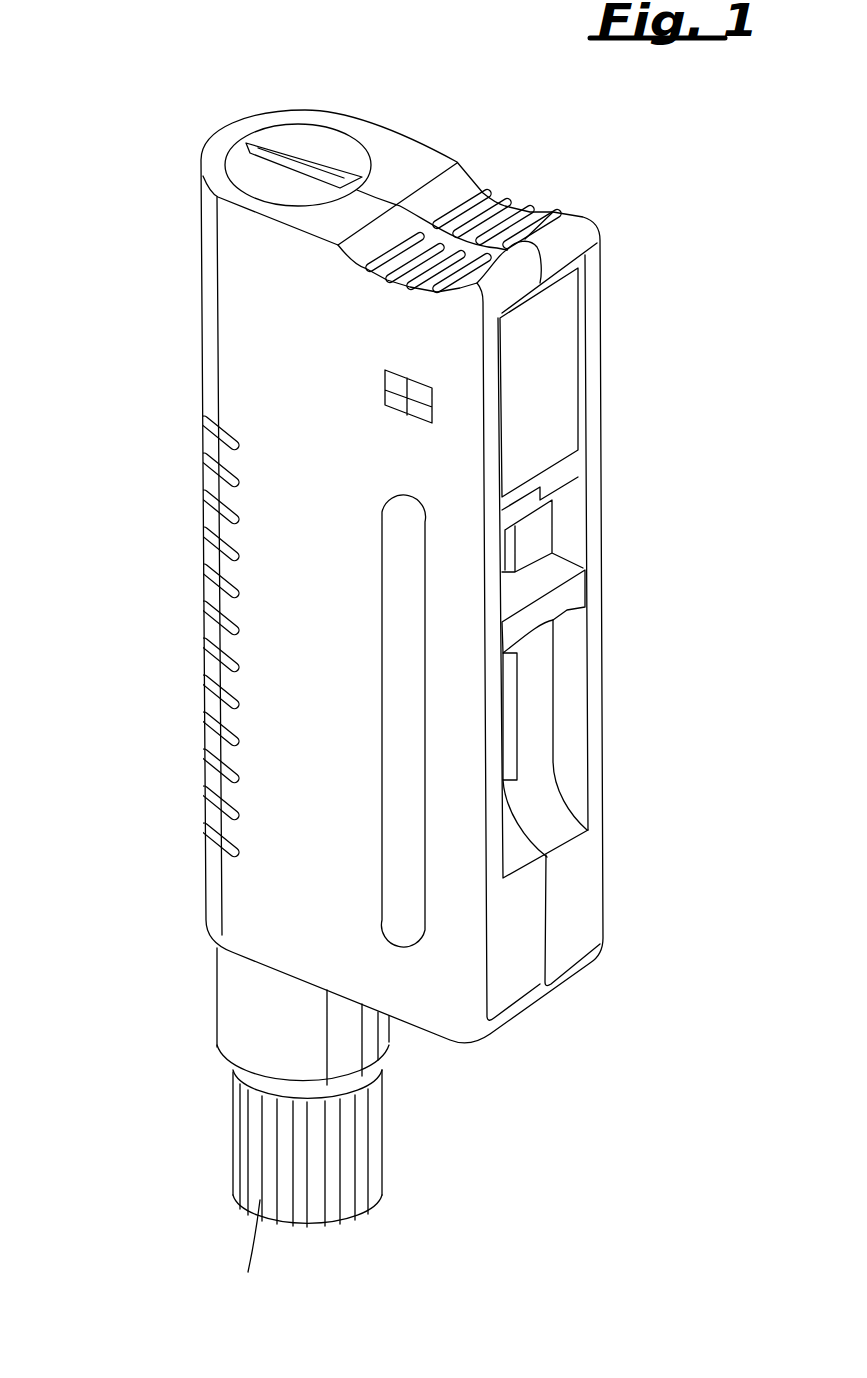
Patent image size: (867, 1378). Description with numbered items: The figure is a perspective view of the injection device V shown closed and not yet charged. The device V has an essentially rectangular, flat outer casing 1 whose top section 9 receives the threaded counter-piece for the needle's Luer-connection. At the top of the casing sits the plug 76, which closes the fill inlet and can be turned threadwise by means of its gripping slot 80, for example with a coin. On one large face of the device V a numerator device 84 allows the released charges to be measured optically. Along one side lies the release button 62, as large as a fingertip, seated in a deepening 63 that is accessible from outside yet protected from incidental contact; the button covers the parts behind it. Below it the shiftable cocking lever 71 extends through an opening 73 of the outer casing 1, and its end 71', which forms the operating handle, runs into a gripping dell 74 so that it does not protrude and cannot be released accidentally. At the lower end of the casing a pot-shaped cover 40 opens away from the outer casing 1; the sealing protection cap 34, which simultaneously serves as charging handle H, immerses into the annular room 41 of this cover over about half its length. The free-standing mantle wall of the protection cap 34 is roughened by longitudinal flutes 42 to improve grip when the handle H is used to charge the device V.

The outer casing 1 is at (238, 313).
The top section 9 is at (427, 1102).
The sealing protection cap 34 is at (228, 1198).
The pot-shaped cover 40 is at (243, 1035).
The annular room 41 is at (243, 1040).
The flutes 42 is at (287, 1212).
The release button 62 is at (548, 340).
The deepening 63 is at (582, 380).
The shiftable cocking lever 71 is at (626, 519).
The end of the shiftable cocking lever 71' is at (631, 602).
The opening 73 is at (510, 688).
The gripping dell 74 is at (533, 733).
The plug 76 is at (288, 135).
The gripping slot 80 is at (332, 172).
The numerator device 84 is at (420, 398).
The charging handle H is at (385, 1200).
The device V is at (150, 200).